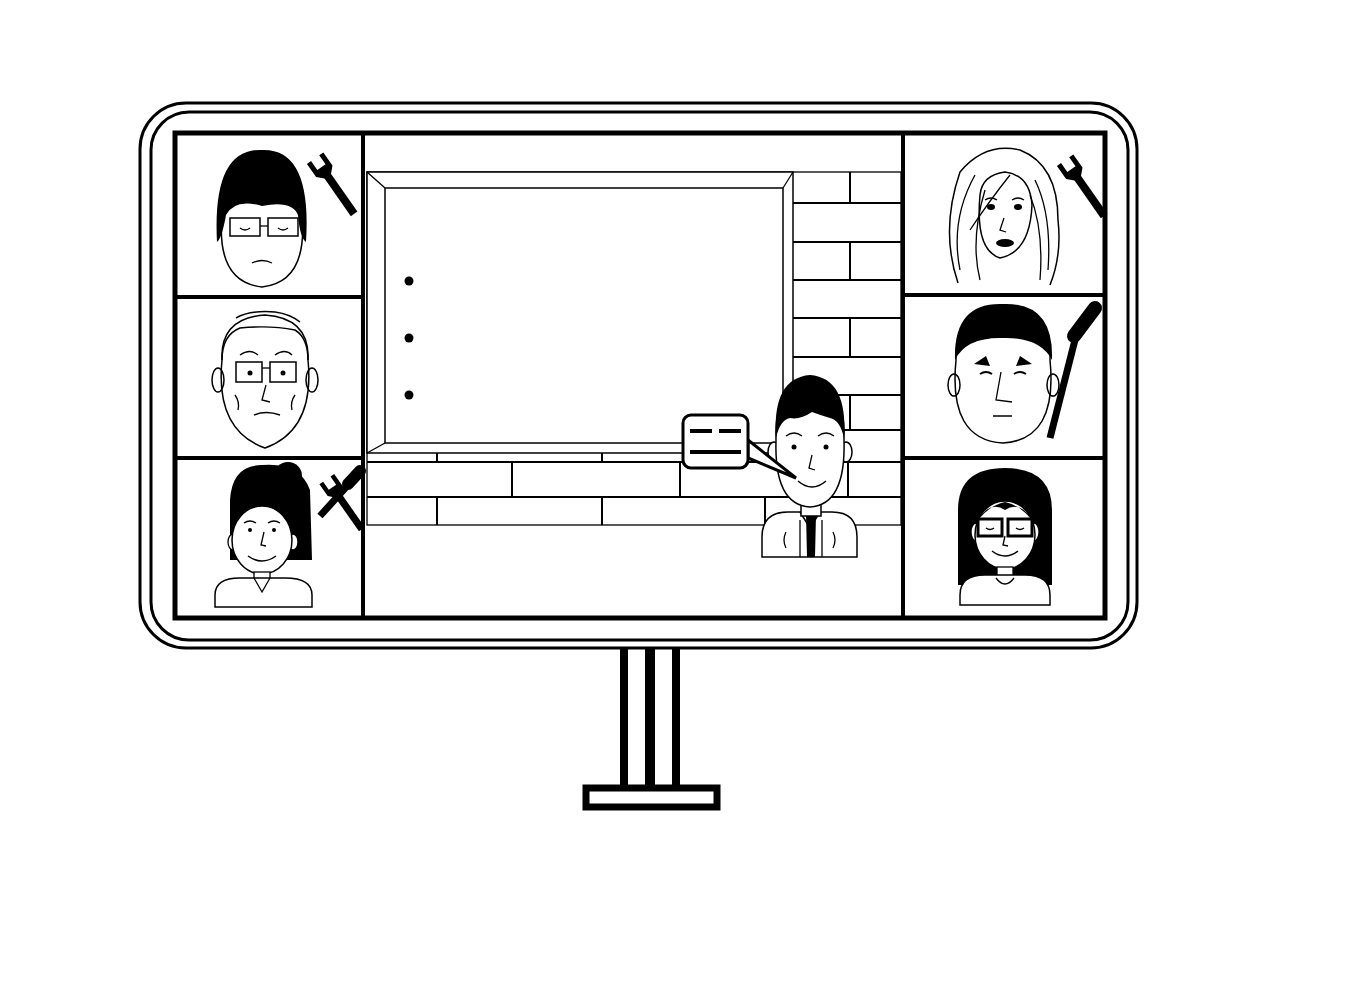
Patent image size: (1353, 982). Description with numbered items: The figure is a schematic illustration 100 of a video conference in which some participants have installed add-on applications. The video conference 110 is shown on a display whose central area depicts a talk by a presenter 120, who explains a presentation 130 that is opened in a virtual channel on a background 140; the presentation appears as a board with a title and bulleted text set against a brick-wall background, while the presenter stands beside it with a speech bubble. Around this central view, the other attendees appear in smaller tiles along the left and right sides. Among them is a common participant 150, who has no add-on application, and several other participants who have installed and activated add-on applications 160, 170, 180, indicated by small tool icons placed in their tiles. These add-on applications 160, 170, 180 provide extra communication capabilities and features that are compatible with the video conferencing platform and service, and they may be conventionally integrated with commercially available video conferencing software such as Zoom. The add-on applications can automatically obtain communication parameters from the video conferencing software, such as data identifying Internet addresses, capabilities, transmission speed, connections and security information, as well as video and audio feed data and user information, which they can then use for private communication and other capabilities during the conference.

The schematic illustration 100 is at (1333, 108).
The video conference 110 is at (140, 133).
The presenter 120 is at (804, 558).
The presentation 130 is at (453, 185).
The background 140 is at (634, 348).
The common participant 150 is at (1052, 590).
The add-on application 160 is at (1082, 176).
The add-on application 170 is at (1092, 328).
The add-on application 180 is at (338, 520).